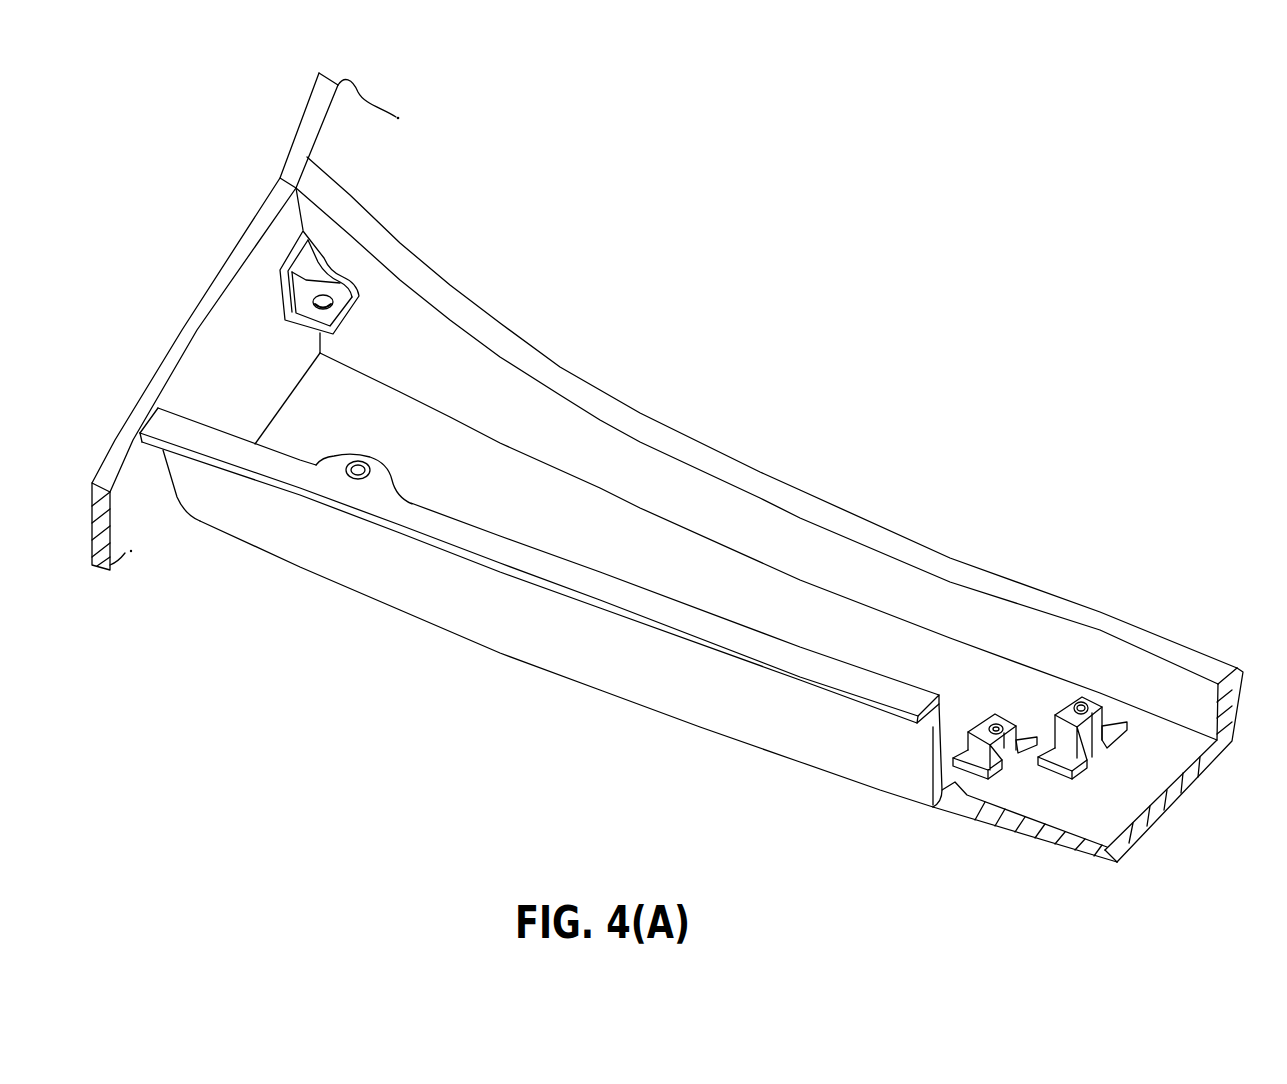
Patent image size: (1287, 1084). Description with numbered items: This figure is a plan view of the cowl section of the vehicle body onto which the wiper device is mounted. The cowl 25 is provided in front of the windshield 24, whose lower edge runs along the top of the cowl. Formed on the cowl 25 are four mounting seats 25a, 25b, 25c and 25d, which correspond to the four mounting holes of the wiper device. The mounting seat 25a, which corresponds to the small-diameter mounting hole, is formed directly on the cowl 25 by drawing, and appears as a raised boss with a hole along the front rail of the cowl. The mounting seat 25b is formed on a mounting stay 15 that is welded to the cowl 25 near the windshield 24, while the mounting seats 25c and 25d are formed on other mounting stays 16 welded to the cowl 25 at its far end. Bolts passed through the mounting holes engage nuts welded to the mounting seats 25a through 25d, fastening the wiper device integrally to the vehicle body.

The windshield 24 is at (355, 150).
The cowl 25 is at (530, 513).
The mounting seat 25a is at (378, 481).
The mounting seat 25b is at (330, 296).
The mounting seat 25c is at (997, 738).
The mounting seat 25d is at (1080, 716).
The mounting stay 15 is at (333, 317).
The mounting stays 16 is at (1017, 725).